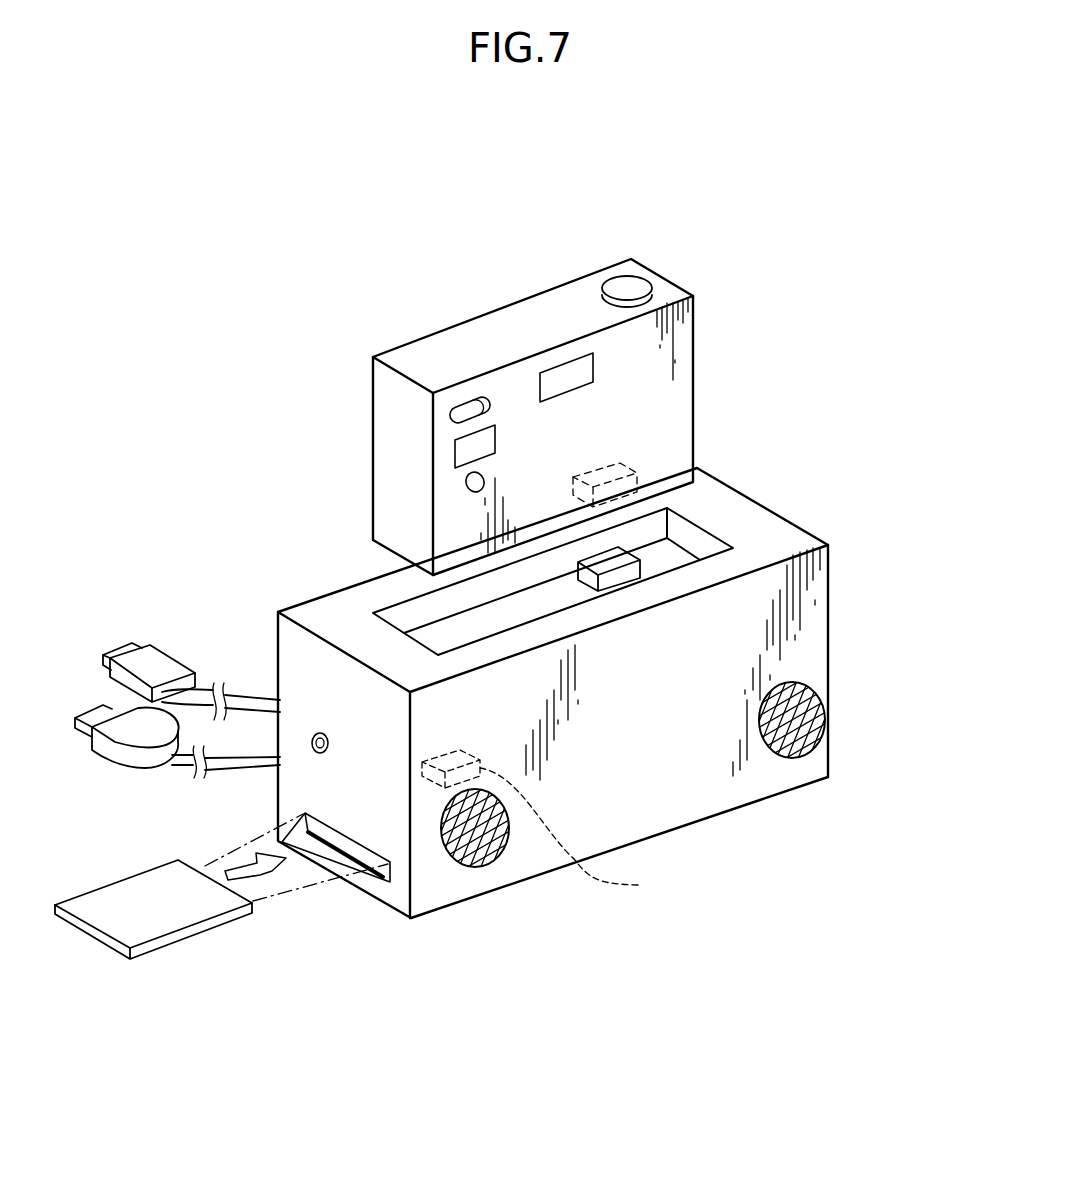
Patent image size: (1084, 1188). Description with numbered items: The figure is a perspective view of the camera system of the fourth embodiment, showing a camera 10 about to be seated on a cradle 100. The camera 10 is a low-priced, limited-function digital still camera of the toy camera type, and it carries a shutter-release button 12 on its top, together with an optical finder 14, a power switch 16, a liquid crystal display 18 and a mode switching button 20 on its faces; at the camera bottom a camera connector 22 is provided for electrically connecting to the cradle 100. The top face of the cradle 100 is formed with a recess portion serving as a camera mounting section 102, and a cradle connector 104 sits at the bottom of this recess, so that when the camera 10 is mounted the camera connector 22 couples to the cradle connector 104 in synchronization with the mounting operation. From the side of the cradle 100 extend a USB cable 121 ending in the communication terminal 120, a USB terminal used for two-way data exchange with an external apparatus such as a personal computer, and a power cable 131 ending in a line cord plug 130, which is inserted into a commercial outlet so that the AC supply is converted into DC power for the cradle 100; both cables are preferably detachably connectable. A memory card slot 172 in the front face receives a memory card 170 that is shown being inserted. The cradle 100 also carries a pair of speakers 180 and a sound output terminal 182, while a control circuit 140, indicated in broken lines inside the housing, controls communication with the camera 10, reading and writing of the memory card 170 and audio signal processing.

The camera 10 is at (537, 310).
The shutter-release button 12 is at (632, 292).
The power switch 16 is at (462, 398).
The optical finder 14 is at (565, 381).
The liquid crystal display 18 is at (455, 456).
The mode switching button 20 is at (467, 484).
The camera connector 22 is at (637, 470).
The cradle 100 is at (805, 657).
The camera mounting section 102 is at (410, 612).
The cradle connector 104 is at (630, 573).
The communication terminal 120 is at (162, 663).
The USB cable 121 is at (243, 700).
The line cord plug 130 is at (122, 735).
The power cable 131 is at (217, 768).
The control circuit 140 is at (567, 832).
The memory card 170 is at (207, 901).
The memory card slot 172 is at (347, 845).
The speakers 180 is at (485, 864).
The sound output terminal 182 is at (316, 752).